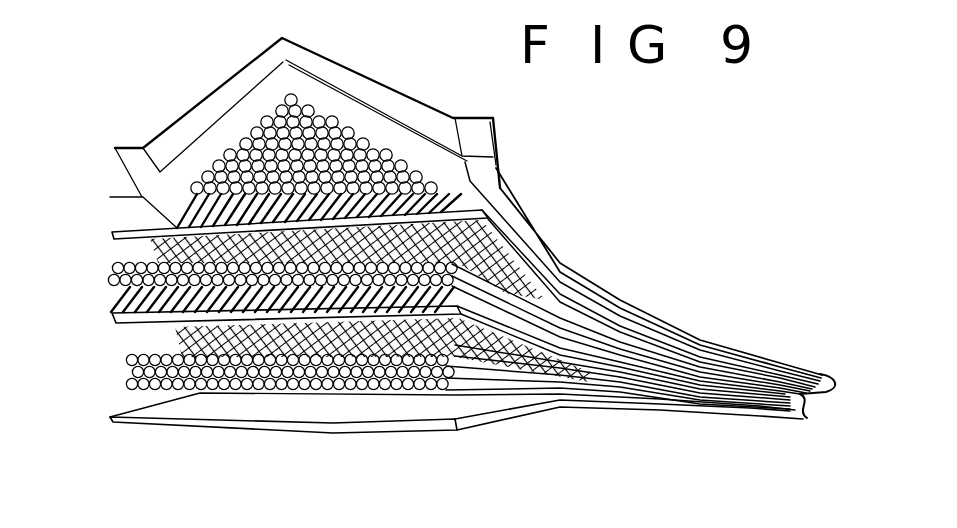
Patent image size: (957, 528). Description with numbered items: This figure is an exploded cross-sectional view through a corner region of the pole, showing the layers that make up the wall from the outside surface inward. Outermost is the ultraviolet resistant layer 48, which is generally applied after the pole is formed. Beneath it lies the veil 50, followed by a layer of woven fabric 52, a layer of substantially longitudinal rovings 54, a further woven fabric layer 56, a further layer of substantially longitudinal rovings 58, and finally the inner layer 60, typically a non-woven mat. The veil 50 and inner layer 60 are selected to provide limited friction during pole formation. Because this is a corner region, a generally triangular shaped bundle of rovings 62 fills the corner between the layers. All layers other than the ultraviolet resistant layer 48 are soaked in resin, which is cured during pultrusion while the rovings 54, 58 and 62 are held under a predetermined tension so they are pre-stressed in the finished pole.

The ultraviolet resistant layer 48 is at (135, 147).
The veil 50 is at (485, 180).
The layer of woven fabric 52 is at (110, 232).
The layer of substantially longitudinal rovings 54 is at (112, 268).
The further woven fabric layer 56 is at (112, 318).
The further layer of substantially longitudinal rovings 58 is at (130, 362).
The inner layer 60 is at (185, 427).
The generally triangular shaped bundle of rovings 62 is at (246, 138).